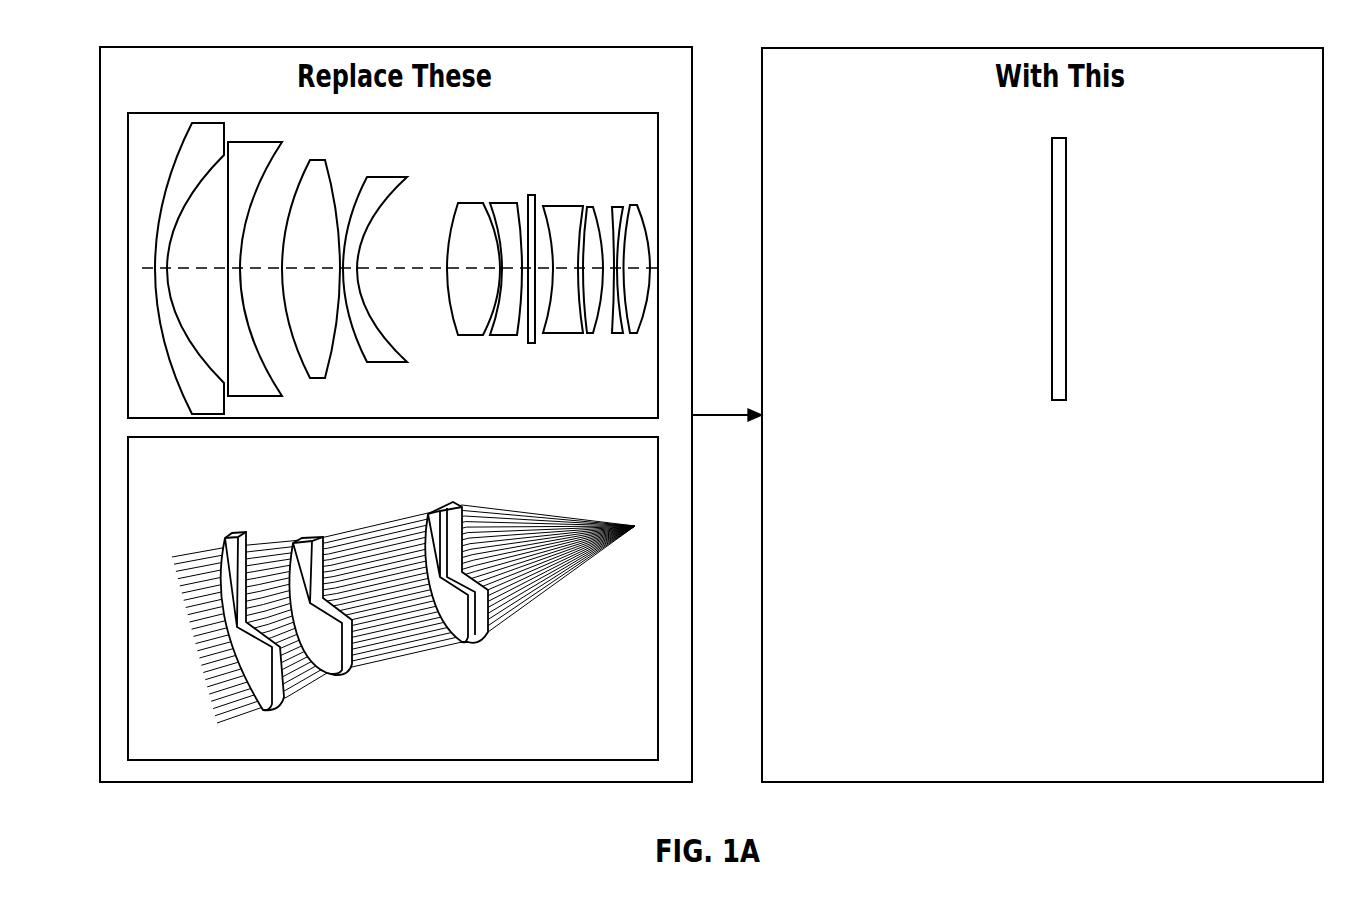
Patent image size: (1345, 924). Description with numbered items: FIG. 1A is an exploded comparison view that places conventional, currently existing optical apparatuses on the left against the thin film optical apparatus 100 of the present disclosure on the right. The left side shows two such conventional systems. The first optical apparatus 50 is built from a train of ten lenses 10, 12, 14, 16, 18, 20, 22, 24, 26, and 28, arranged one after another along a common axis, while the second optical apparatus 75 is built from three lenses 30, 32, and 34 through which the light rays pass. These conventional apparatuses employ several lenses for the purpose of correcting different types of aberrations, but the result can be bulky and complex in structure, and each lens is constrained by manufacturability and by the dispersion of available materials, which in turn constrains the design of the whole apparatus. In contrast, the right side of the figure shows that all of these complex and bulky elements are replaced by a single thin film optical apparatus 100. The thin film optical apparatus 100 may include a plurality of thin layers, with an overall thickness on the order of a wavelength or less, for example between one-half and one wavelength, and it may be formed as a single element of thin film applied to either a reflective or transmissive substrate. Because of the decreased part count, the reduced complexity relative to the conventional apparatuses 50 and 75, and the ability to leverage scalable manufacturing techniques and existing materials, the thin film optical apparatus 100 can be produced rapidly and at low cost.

The lens 10 is at (212, 133).
The lens 12 is at (263, 147).
The lens 14 is at (317, 160).
The lens 16 is at (388, 176).
The lens 18 is at (473, 210).
The lens 20 is at (510, 210).
The lens 22 is at (553, 210).
The lens 24 is at (592, 210).
The lens 26 is at (617, 210).
The lens 28 is at (640, 253).
The lens 30 is at (235, 537).
The lens 32 is at (312, 540).
The lens 34 is at (437, 512).
The optical apparatus 50 is at (142, 176).
The optical apparatus 75 is at (142, 610).
The thin film optical apparatus 100 is at (1104, 174).